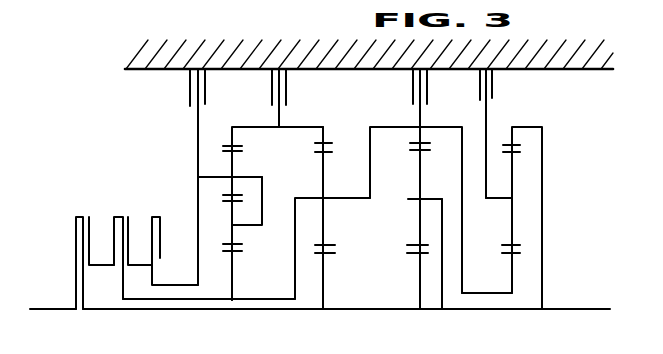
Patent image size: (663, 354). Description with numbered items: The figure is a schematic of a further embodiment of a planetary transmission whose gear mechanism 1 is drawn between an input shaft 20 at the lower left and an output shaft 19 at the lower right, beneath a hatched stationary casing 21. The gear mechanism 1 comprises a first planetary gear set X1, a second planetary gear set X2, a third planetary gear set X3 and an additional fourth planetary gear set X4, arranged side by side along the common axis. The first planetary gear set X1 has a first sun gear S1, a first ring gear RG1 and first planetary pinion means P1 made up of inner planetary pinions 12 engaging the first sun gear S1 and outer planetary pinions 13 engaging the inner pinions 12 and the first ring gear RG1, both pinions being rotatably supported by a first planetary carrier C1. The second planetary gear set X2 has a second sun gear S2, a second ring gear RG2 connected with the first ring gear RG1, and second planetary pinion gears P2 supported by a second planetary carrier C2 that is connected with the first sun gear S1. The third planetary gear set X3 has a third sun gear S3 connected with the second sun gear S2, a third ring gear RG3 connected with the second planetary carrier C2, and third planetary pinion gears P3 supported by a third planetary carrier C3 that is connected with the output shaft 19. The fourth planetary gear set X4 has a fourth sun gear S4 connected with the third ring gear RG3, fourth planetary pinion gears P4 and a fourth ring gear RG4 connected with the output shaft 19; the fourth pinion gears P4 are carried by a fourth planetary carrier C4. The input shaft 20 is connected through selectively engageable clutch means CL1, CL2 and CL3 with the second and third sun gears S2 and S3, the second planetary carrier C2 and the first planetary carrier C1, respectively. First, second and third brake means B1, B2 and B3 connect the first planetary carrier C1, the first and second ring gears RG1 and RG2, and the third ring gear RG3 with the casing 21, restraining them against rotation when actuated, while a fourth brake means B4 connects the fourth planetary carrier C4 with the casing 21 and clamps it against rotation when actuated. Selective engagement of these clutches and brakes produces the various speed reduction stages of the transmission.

The casing 21 is at (137, 71).
The first brake means B1 is at (189, 91).
The second brake means B2 is at (271, 90).
The third brake means B3 is at (412, 90).
The fourth brake means B4 is at (493, 94).
The first ring gear RG1 is at (235, 142).
The second ring gear RG2 is at (332, 137).
The third ring gear RG3 is at (421, 138).
The fourth ring gear RG4 is at (504, 140).
The first planetary pinion means P1 is at (219, 172).
The second planetary pinion gears P2 is at (330, 219).
The third planetary pinion gears P3 is at (418, 232).
The fourth planetary pinion gears P4 is at (544, 220).
The first sun gear S1 is at (233, 273).
The second sun gear S2 is at (327, 288).
The third sun gear S3 is at (422, 287).
The fourth sun gear S4 is at (512, 277).
The first planetary carrier C1 is at (250, 224).
The second planetary carrier C2 is at (343, 198).
The third planetary carrier C3 is at (432, 199).
The fourth planetary carrier C4 is at (511, 223).
The first clutch means CL1 is at (79, 215).
The second clutch means CL2 is at (126, 215).
The third clutch means CL3 is at (157, 215).
The first planetary gear set X1 is at (223, 268).
The second planetary gear set X2 is at (317, 270).
The third planetary gear set X3 is at (408, 270).
The fourth planetary gear set X4 is at (502, 262).
The inner planetary pinions 12 is at (236, 237).
The outer planetary pinions 13 is at (229, 181).
The gear mechanism 1 is at (175, 315).
The input shaft 20 is at (53, 330).
The output shaft 19 is at (573, 310).